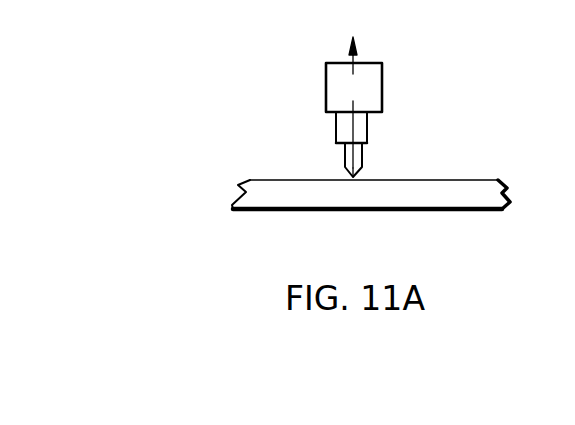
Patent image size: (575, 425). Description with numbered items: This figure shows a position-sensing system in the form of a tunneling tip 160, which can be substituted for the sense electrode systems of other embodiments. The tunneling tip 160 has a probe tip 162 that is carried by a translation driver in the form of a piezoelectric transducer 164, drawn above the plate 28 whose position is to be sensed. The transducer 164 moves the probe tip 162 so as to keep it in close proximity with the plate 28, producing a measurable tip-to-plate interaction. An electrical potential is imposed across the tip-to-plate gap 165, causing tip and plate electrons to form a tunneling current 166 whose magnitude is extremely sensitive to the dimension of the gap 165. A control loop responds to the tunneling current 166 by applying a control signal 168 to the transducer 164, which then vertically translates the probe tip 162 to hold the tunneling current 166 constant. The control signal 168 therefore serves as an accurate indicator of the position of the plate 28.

The tunneling tip 160 is at (391, 89).
The probe tip 162 is at (363, 169).
The piezoelectric transducer 164 is at (337, 127).
The tip-to-plate gap 165 is at (345, 174).
The tunneling current 166 is at (354, 74).
The control signal 168 is at (378, 125).
The plate 28 is at (257, 212).